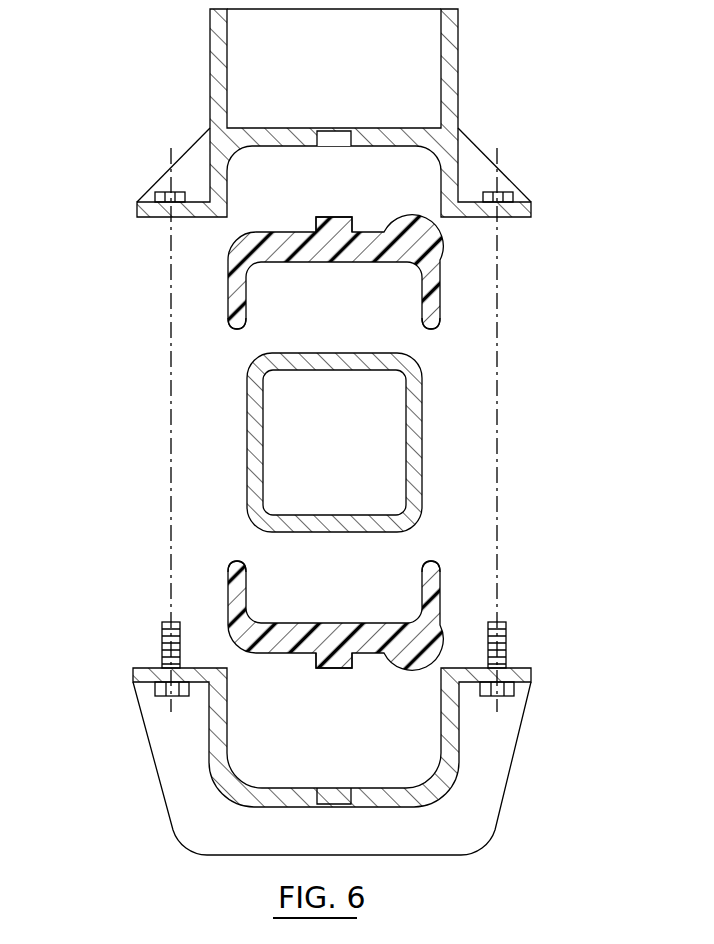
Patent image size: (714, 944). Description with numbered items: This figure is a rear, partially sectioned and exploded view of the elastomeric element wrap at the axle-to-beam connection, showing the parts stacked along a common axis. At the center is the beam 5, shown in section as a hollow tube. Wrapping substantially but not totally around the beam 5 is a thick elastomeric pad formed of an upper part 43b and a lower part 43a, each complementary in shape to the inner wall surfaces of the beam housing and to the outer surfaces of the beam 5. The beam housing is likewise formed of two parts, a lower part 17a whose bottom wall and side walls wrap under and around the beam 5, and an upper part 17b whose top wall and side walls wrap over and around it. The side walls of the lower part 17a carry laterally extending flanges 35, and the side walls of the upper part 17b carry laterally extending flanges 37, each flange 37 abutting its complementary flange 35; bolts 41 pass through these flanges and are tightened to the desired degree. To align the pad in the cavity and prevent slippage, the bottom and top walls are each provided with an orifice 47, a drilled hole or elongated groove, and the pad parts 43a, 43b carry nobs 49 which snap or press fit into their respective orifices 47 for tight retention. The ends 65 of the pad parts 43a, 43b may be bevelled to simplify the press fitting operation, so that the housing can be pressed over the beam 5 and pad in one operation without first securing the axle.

The lower part of beam housing 17a is at (166, 104).
The upper part of beam housing 17b is at (146, 782).
The laterally extending flanges 37 is at (157, 218).
The orifice 47 is at (333, 137).
The nobs 49 is at (328, 216).
The upper part of elastomeric pad 43b is at (443, 278).
The lower part of elastomeric pad 43a is at (228, 600).
The ends of pads 65 is at (238, 331).
The beam 5 is at (424, 437).
The laterally extending flanges 35 is at (156, 675).
The bolts 41 is at (168, 697).